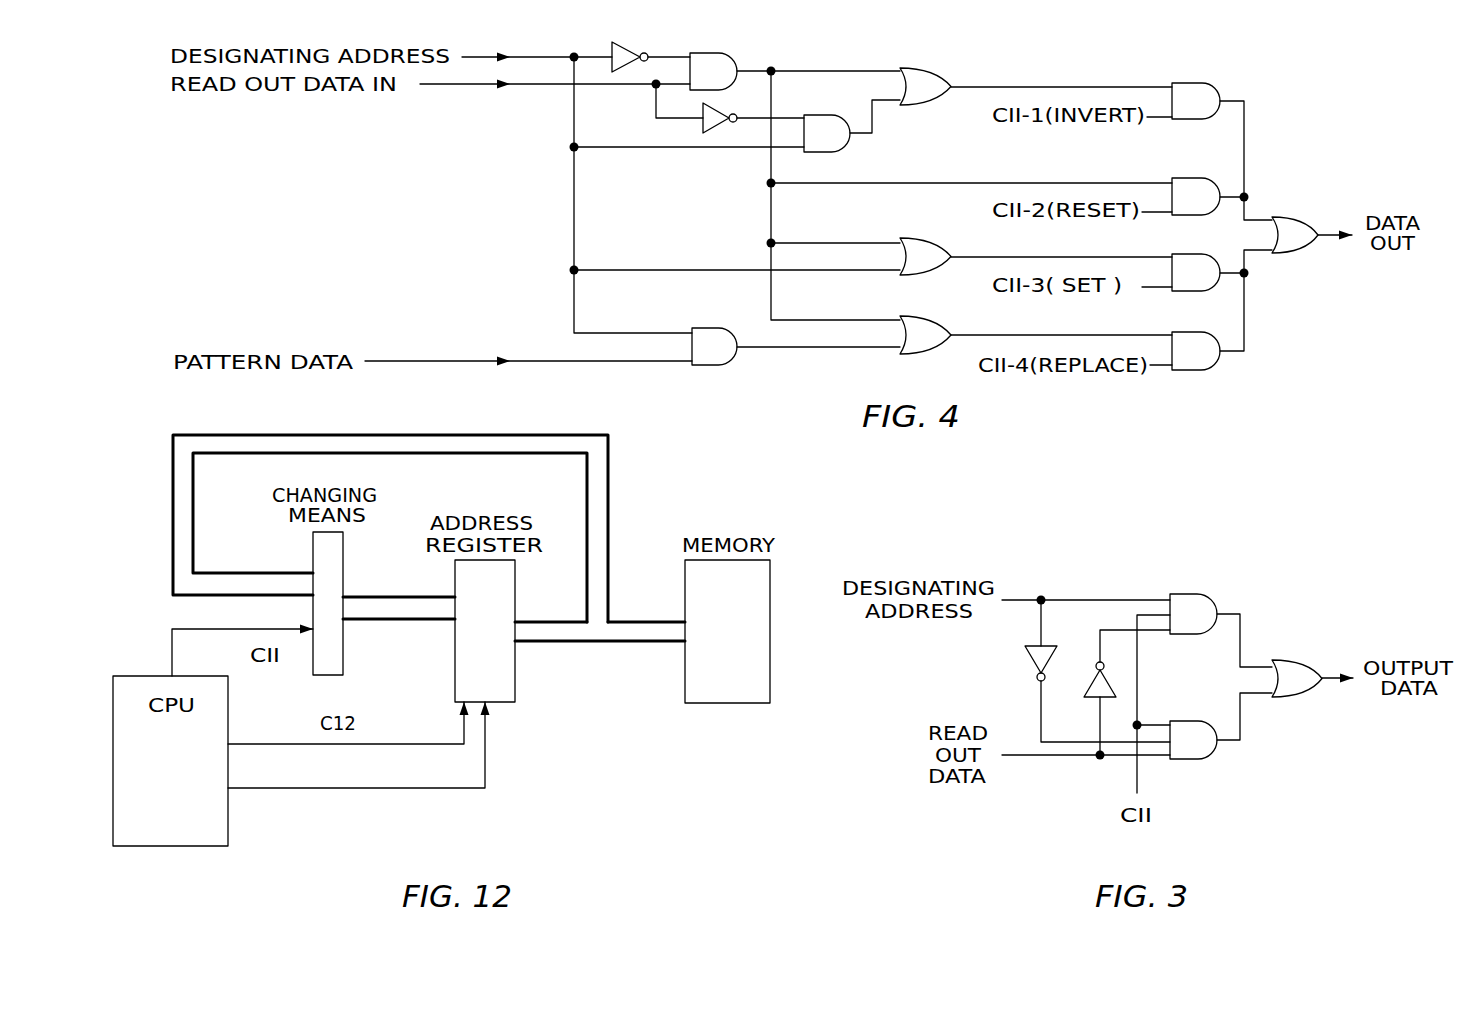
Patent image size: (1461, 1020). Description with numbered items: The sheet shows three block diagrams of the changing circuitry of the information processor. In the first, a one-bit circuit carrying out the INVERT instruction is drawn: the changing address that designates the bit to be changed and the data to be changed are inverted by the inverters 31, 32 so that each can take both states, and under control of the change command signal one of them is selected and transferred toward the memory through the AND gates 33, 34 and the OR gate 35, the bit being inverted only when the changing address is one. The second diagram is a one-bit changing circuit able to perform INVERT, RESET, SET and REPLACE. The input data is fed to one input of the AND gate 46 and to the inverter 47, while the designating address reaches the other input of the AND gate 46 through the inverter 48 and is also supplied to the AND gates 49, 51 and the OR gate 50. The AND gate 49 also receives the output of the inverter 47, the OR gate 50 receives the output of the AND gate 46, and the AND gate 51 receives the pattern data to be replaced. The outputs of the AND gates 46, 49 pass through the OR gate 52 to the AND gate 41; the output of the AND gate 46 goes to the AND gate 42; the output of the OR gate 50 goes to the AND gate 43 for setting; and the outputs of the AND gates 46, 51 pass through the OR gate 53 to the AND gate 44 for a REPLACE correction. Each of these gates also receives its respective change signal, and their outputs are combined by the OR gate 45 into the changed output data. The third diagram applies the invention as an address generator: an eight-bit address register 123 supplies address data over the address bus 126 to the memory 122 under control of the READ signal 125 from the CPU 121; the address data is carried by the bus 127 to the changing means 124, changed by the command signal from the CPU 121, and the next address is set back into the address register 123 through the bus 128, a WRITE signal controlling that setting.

In FIG. 3, the inverter 31 is at (1045, 643).
In FIG. 3, the inverter 32 is at (1091, 698).
In FIG. 3, the AND gate 33 is at (1215, 598).
In FIG. 3, the AND gate 34 is at (1206, 760).
In FIG. 3, the OR gate 35 is at (1290, 660).
In FIG. 4, the AND gate 41 is at (1216, 85).
In FIG. 4, the AND gate 42 is at (1180, 178).
In FIG. 4, the AND gate 43 is at (1180, 254).
In FIG. 4, the AND gate 44 is at (1180, 333).
In FIG. 4, the OR gate 45 is at (1306, 216).
In FIG. 4, the AND gate 46 is at (735, 55).
In FIG. 4, the inverter 47 is at (722, 126).
In FIG. 4, the inverter 48 is at (628, 42).
In FIG. 4, the AND gate 49 is at (838, 151).
In FIG. 4, the OR gate 50 is at (913, 238).
In FIG. 4, the AND gate 51 is at (703, 328).
In FIG. 4, the OR gate 52 is at (948, 76).
In FIG. 4, the OR gate 53 is at (916, 318).
In FIG. 12, the CPU 121 is at (228, 843).
In FIG. 12, the memory 122 is at (745, 705).
In FIG. 12, the address register 123 is at (500, 703).
In FIG. 12, the changing means 124 is at (343, 583).
In FIG. 12, the READ signal 125 is at (400, 790).
In FIG. 12, the address bus 126 is at (548, 634).
In FIG. 12, the bus 127 is at (598, 498).
In FIG. 12, the bus 128 is at (399, 632).